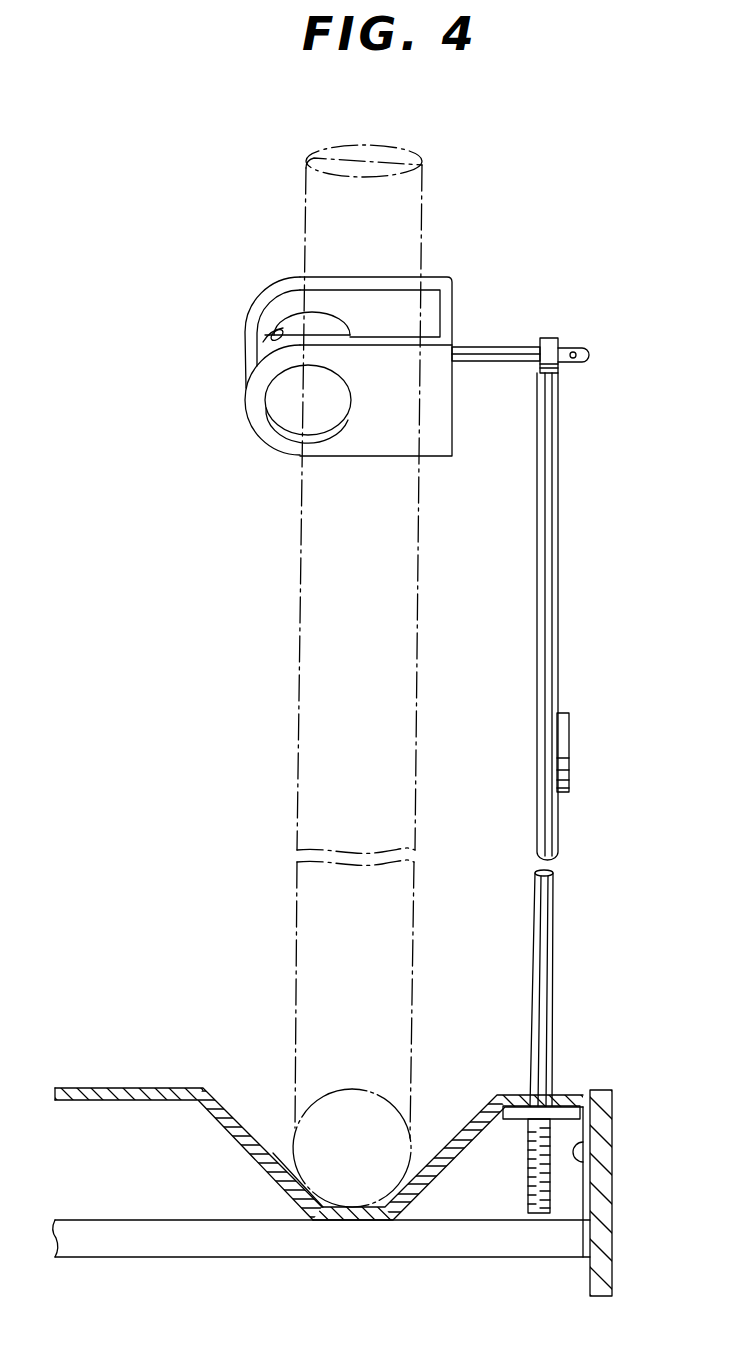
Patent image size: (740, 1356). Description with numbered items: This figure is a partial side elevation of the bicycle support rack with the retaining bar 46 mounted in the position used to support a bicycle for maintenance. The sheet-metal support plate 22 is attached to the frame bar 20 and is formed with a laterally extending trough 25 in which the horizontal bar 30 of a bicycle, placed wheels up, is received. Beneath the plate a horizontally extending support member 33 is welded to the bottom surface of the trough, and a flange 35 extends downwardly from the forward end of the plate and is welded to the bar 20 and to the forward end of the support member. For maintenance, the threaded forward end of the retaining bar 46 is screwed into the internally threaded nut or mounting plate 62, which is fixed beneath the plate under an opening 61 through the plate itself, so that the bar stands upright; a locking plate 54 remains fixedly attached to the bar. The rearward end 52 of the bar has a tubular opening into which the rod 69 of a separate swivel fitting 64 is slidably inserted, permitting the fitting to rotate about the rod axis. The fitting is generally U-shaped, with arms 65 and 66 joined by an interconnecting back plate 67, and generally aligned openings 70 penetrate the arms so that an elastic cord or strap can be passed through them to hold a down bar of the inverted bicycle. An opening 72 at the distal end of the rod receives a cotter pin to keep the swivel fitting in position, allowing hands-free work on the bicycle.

The bar 20 is at (612, 1282).
The support plate 22 is at (118, 1101).
The trough 25 is at (462, 1128).
The horizontal bar 30 is at (291, 1087).
The support member 33 is at (102, 1258).
The flange 35 is at (592, 1158).
The retaining bar 46 is at (558, 625).
The rearward end 52 is at (560, 340).
The locking plate 54 is at (570, 737).
The opening 61 is at (547, 1092).
The mounting plate 62 is at (512, 1122).
The swivel fitting 64 is at (474, 273).
The arm 65 is at (258, 300).
The arm 66 is at (245, 413).
The back plate 67 is at (455, 310).
The rod 69 is at (513, 347).
The openings 70 is at (270, 338).
The opening 72 is at (577, 362).